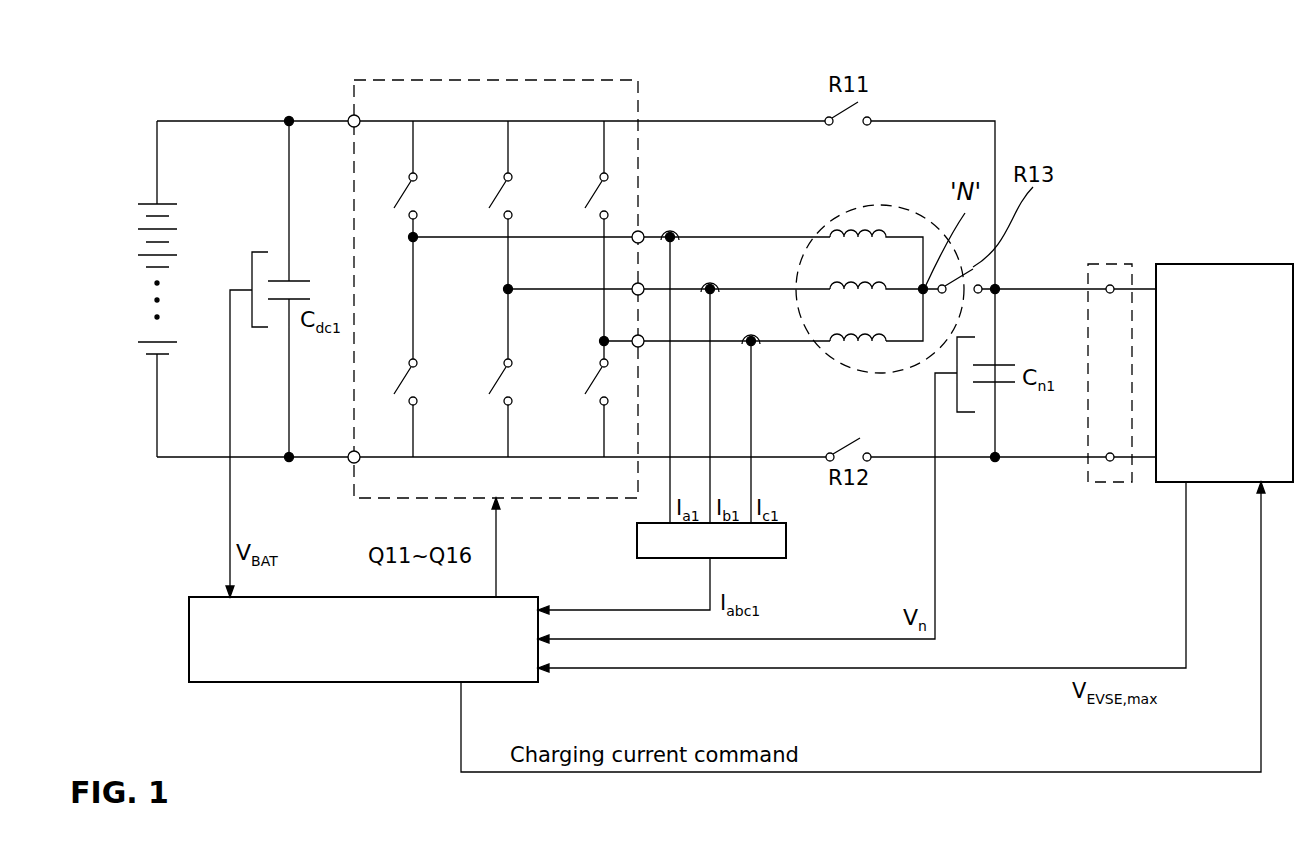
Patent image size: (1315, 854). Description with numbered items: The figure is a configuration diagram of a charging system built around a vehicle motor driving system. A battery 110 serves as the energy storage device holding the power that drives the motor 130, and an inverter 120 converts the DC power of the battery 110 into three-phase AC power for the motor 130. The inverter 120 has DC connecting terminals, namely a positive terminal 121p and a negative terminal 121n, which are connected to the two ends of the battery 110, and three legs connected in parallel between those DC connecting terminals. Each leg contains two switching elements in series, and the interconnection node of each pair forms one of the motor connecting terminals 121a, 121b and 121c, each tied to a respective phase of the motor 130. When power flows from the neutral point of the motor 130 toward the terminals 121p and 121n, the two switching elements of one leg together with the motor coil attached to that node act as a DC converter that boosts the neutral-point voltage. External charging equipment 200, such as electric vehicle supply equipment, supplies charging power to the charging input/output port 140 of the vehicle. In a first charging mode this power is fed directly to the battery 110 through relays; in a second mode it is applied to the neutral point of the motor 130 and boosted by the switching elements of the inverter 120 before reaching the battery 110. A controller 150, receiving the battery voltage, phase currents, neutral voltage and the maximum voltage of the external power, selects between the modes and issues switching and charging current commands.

The battery 110 is at (140, 297).
The inverter 120 is at (640, 162).
The motor connecting terminal 121a is at (645, 232).
The motor connecting terminal 121b is at (645, 285).
The motor connecting terminal 121c is at (635, 347).
The positive terminal 121p is at (352, 115).
The negative terminal 121n is at (352, 464).
The motor 130 is at (880, 205).
The charging input/output port 140 is at (1110, 264).
The controller 150 is at (380, 684).
The external charging equipment 200 is at (1225, 264).